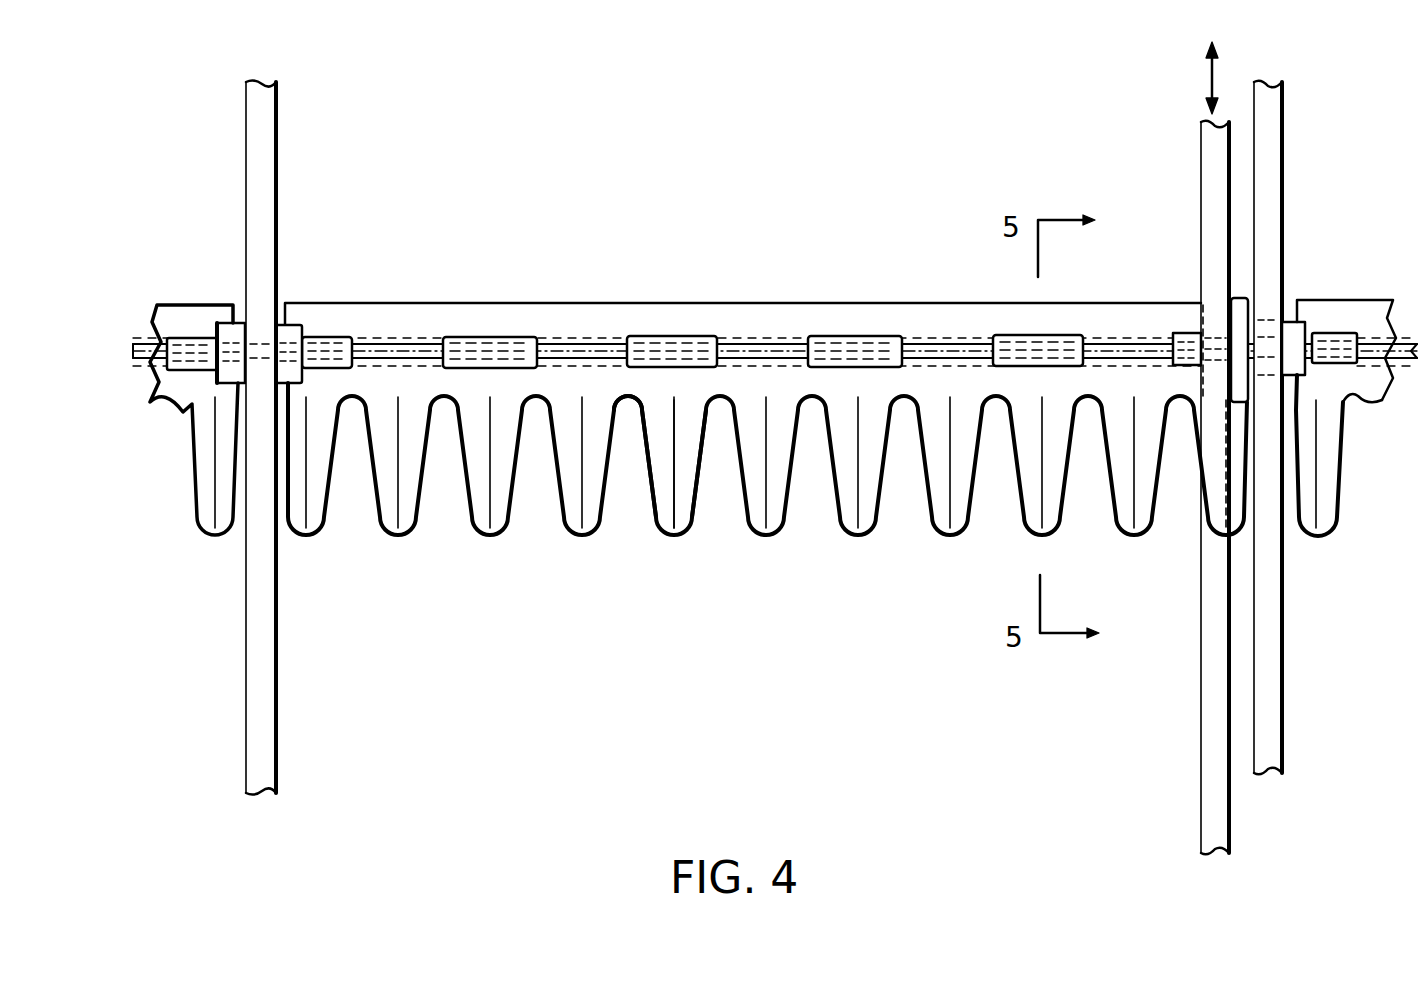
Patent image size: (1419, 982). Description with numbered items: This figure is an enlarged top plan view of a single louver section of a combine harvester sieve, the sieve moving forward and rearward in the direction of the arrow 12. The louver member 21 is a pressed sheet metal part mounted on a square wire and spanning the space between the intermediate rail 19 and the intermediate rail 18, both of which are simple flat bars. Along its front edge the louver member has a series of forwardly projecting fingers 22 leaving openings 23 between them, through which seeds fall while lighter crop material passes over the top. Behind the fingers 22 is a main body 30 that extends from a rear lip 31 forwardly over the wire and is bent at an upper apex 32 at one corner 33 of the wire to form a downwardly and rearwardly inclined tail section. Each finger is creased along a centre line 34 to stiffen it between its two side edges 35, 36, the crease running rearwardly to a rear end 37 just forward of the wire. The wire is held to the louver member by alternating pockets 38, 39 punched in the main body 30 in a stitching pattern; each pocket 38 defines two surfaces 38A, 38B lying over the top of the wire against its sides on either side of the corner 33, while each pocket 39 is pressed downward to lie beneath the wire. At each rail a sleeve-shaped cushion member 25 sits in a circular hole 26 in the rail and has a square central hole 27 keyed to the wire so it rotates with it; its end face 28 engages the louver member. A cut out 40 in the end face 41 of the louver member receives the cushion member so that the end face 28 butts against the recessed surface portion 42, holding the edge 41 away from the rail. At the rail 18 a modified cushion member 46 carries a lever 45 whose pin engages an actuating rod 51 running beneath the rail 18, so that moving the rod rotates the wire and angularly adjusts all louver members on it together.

The arrow 12 is at (1207, 80).
The intermediate rail 18 is at (1287, 160).
The intermediate rail 19 is at (278, 152).
The louver member 21 is at (733, 400).
The fingers 22 is at (733, 459).
The openings 23 is at (445, 495).
The cushion member 25 is at (233, 337).
The hole 26 is at (258, 322).
The central hole 27 is at (205, 345).
The end face 28 is at (300, 338).
The main body 30 is at (405, 300).
The rear lip 31 is at (483, 303).
The upper apex 32 is at (646, 350).
The corner 33 is at (746, 350).
The centre line 34 is at (669, 505).
The side edge 35 is at (643, 475).
The side edge 36 is at (701, 480).
The rear end 37 is at (675, 396).
The pocket 38 is at (868, 332).
The surface 38A is at (1036, 343).
The surface 38B is at (1044, 356).
The pocket 39 is at (947, 333).
The cut out 40 is at (1320, 322).
The end face 41 is at (1290, 528).
The recessed surface portion 42 is at (1343, 398).
The lever 45 is at (1234, 318).
The modified cushion member 46 is at (1291, 323).
The actuating rod 51 is at (1199, 166).